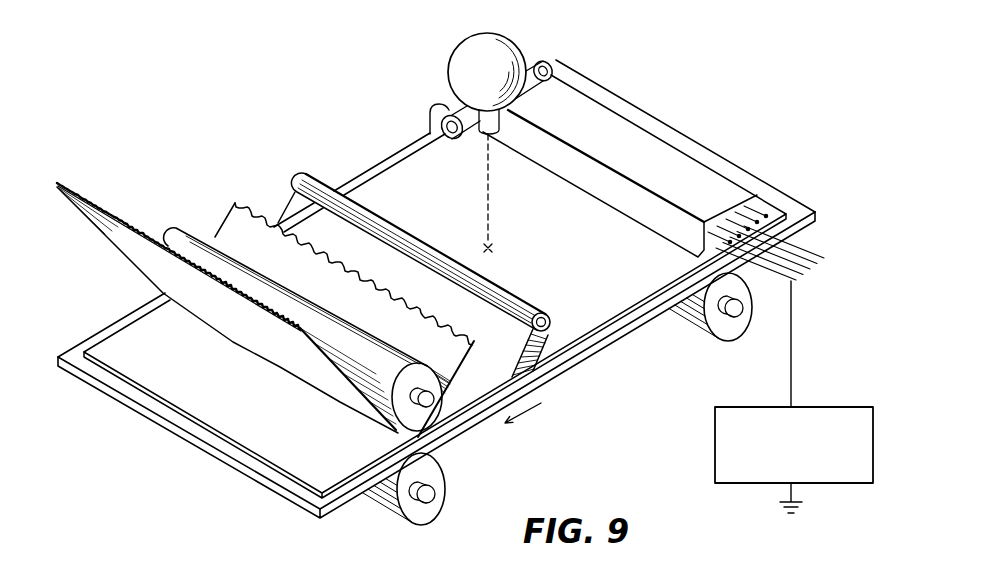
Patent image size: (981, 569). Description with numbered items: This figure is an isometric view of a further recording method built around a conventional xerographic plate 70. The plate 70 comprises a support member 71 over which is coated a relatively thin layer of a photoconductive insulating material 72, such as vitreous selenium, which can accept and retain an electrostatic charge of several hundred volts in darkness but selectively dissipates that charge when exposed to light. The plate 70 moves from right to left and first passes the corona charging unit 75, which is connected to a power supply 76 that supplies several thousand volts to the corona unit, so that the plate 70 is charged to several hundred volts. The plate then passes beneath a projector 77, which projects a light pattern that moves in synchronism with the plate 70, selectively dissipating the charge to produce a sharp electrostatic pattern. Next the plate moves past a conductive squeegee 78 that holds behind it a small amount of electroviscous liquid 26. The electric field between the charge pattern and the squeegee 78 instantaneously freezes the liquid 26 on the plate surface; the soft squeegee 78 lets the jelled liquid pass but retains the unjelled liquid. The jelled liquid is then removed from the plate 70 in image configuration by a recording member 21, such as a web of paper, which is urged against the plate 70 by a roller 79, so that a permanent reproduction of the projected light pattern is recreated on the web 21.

The xerographic plate 70 is at (163, 461).
The support member 71 is at (267, 485).
The photoconductive insulating material 72 is at (107, 330).
The recording member 21 is at (100, 232).
The roller 79 is at (192, 228).
The conductive squeegee 78 is at (296, 182).
The electroviscous liquid 26 is at (548, 342).
The corona charging unit 75 is at (648, 135).
The projector 77 is at (509, 37).
The power supply 76 is at (745, 407).